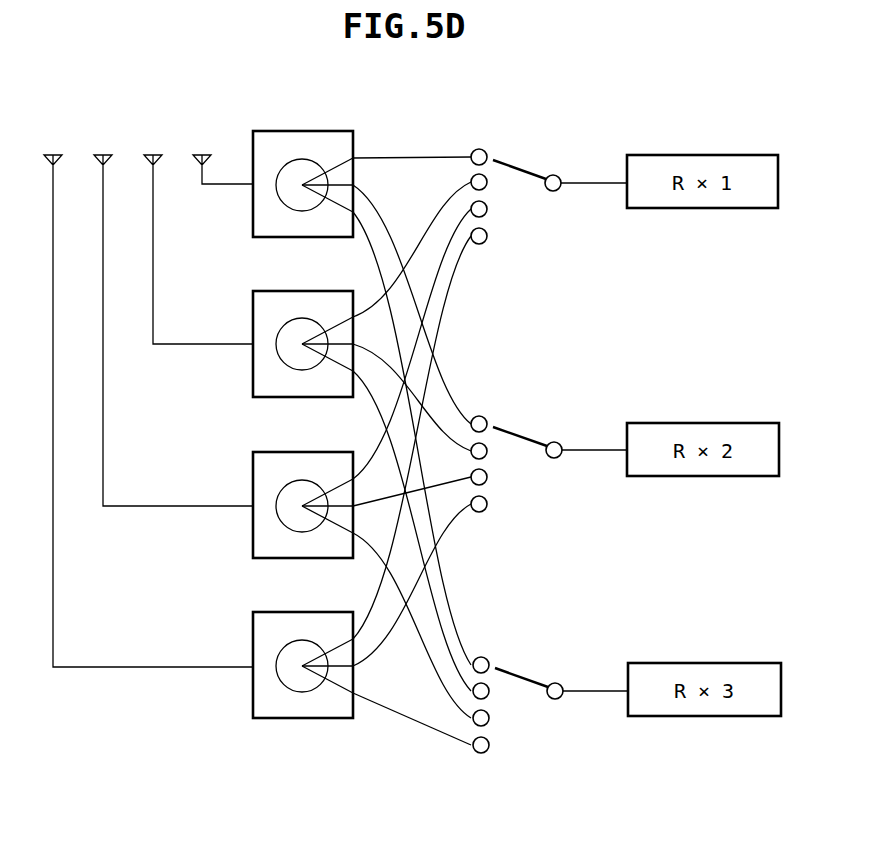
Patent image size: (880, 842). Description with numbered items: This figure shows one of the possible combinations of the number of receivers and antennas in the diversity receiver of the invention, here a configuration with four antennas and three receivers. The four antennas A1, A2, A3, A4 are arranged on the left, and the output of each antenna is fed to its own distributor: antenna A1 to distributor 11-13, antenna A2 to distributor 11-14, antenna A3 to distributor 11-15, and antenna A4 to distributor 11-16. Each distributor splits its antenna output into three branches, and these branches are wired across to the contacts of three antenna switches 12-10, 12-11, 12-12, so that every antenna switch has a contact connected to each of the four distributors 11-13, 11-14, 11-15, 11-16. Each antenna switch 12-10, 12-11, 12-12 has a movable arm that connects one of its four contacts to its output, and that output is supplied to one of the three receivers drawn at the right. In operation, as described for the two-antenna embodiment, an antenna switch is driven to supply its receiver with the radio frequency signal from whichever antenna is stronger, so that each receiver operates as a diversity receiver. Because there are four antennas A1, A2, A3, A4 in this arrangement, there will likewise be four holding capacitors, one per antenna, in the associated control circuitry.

The antenna A1 is at (223, 153).
The antenna A2 is at (198, 233).
The antenna A3 is at (173, 314).
The antenna A4 is at (148, 394).
The distributor 11-13 is at (362, 379).
The distributor 11-14 is at (362, 436).
The distributor 11-15 is at (362, 463).
The distributor 11-16 is at (362, 490).
The antenna switch 12-10 is at (549, 195).
The antenna switch 12-11 is at (549, 463).
The antenna switch 12-12 is at (550, 704).